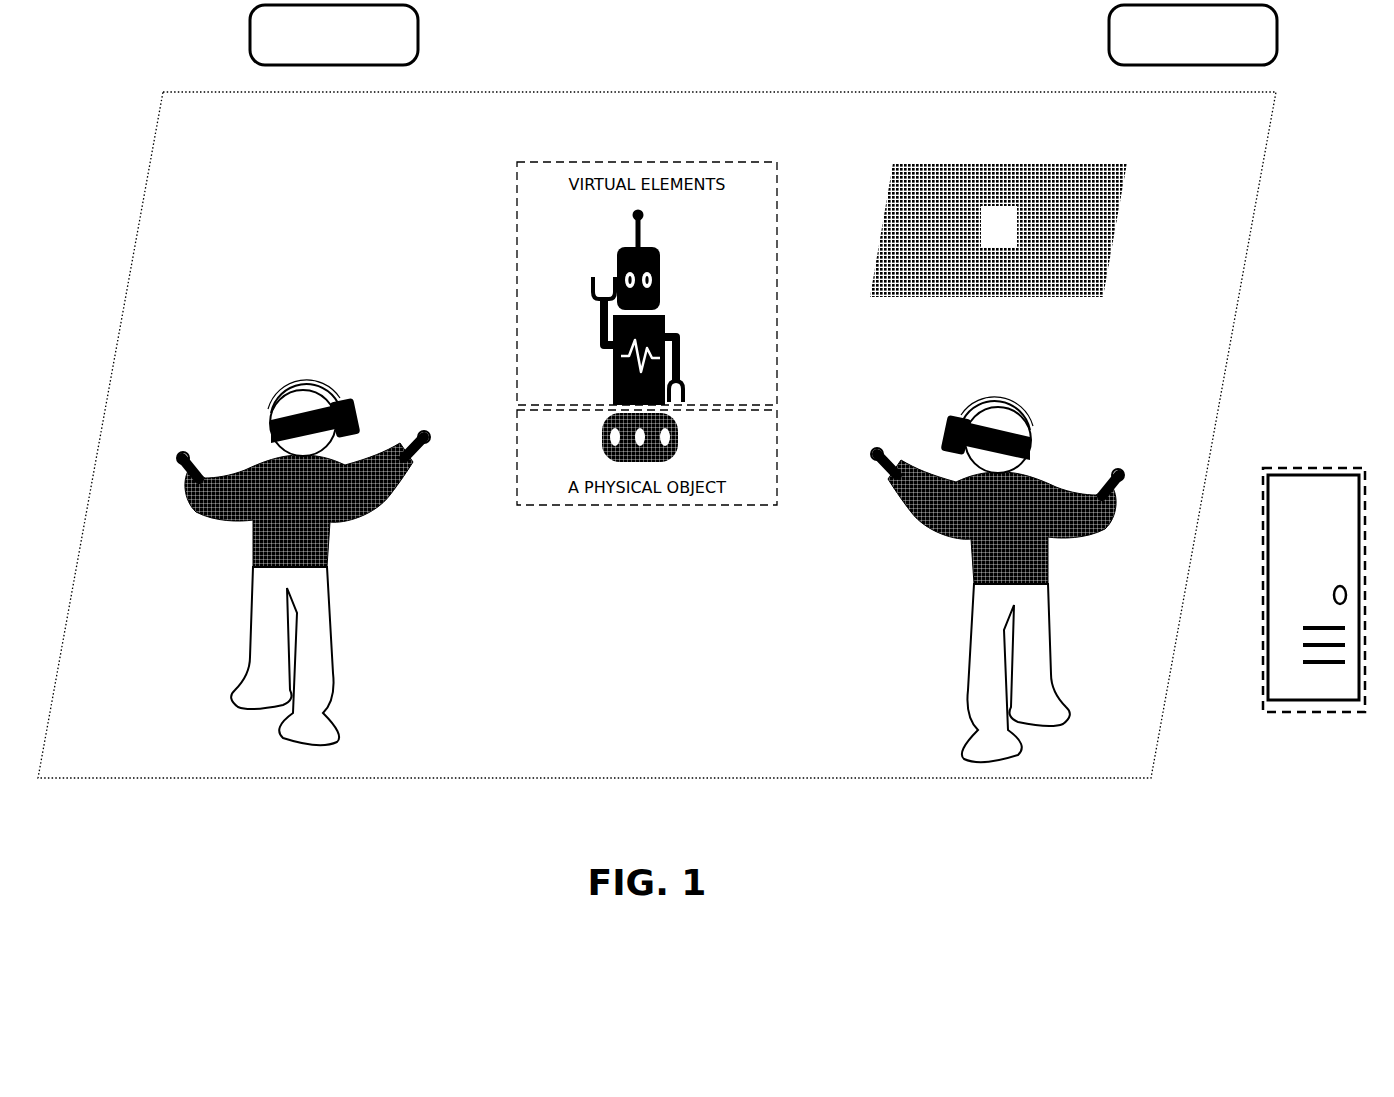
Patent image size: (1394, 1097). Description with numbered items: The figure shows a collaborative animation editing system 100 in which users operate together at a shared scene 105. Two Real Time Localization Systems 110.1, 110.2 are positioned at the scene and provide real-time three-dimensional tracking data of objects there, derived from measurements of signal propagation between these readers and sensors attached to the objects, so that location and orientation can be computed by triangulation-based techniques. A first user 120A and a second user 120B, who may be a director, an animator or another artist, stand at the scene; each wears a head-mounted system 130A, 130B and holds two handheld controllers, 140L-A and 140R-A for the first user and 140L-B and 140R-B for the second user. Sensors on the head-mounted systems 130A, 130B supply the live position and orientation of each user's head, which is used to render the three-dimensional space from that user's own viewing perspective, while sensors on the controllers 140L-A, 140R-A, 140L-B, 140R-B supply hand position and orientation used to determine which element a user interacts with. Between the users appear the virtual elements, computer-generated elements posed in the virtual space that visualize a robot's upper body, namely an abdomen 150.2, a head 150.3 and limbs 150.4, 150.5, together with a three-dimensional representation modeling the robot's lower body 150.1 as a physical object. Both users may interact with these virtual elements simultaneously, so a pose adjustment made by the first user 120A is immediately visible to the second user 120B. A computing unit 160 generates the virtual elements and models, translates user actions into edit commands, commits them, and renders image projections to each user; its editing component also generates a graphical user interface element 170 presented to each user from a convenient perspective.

The collaborative animation editing system 100 is at (668, 921).
The scene 105 is at (657, 435).
The Real Time Localization System 110.1 is at (334, 35).
The Real Time Localization System 110.2 is at (1193, 35).
The first user 120A is at (299, 595).
The second user 120B is at (1002, 613).
The head-mounted system 130A is at (290, 418).
The head-mounted system 130B is at (1009, 435).
The handheld controller 140L-A is at (187, 457).
The handheld controller 140R-A is at (407, 437).
The handheld controller 140L-B is at (880, 453).
The handheld controller 140R-B is at (1118, 474).
The robot's lower body 150.1 is at (666, 437).
The abdomen 150.2 is at (612, 326).
The head 150.3 is at (666, 229).
The limb 150.4 is at (573, 311).
The limb 150.5 is at (702, 369).
The computing unit 160 is at (1314, 613).
The graphical user interface element 170 is at (998, 230).